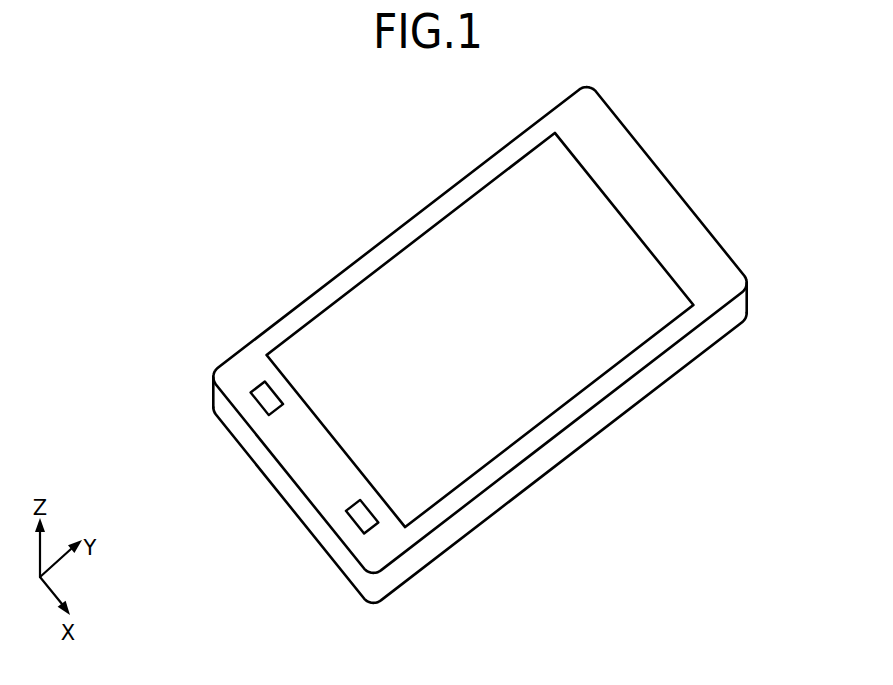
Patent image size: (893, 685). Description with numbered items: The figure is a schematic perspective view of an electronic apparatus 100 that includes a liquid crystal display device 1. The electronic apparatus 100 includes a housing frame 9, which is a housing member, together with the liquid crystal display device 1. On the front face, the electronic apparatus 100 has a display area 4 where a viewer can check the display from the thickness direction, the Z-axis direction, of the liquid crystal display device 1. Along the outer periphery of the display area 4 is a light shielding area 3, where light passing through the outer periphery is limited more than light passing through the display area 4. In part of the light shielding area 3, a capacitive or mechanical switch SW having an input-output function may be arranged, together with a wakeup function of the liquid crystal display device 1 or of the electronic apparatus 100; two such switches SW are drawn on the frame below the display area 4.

The electronic apparatus 100 is at (753, 138).
The liquid crystal display device 1 is at (463, 241).
The display area 4 is at (388, 299).
The light shielding area 3 is at (309, 472).
The housing frame 9 is at (349, 573).
The switch SW is at (247, 400).